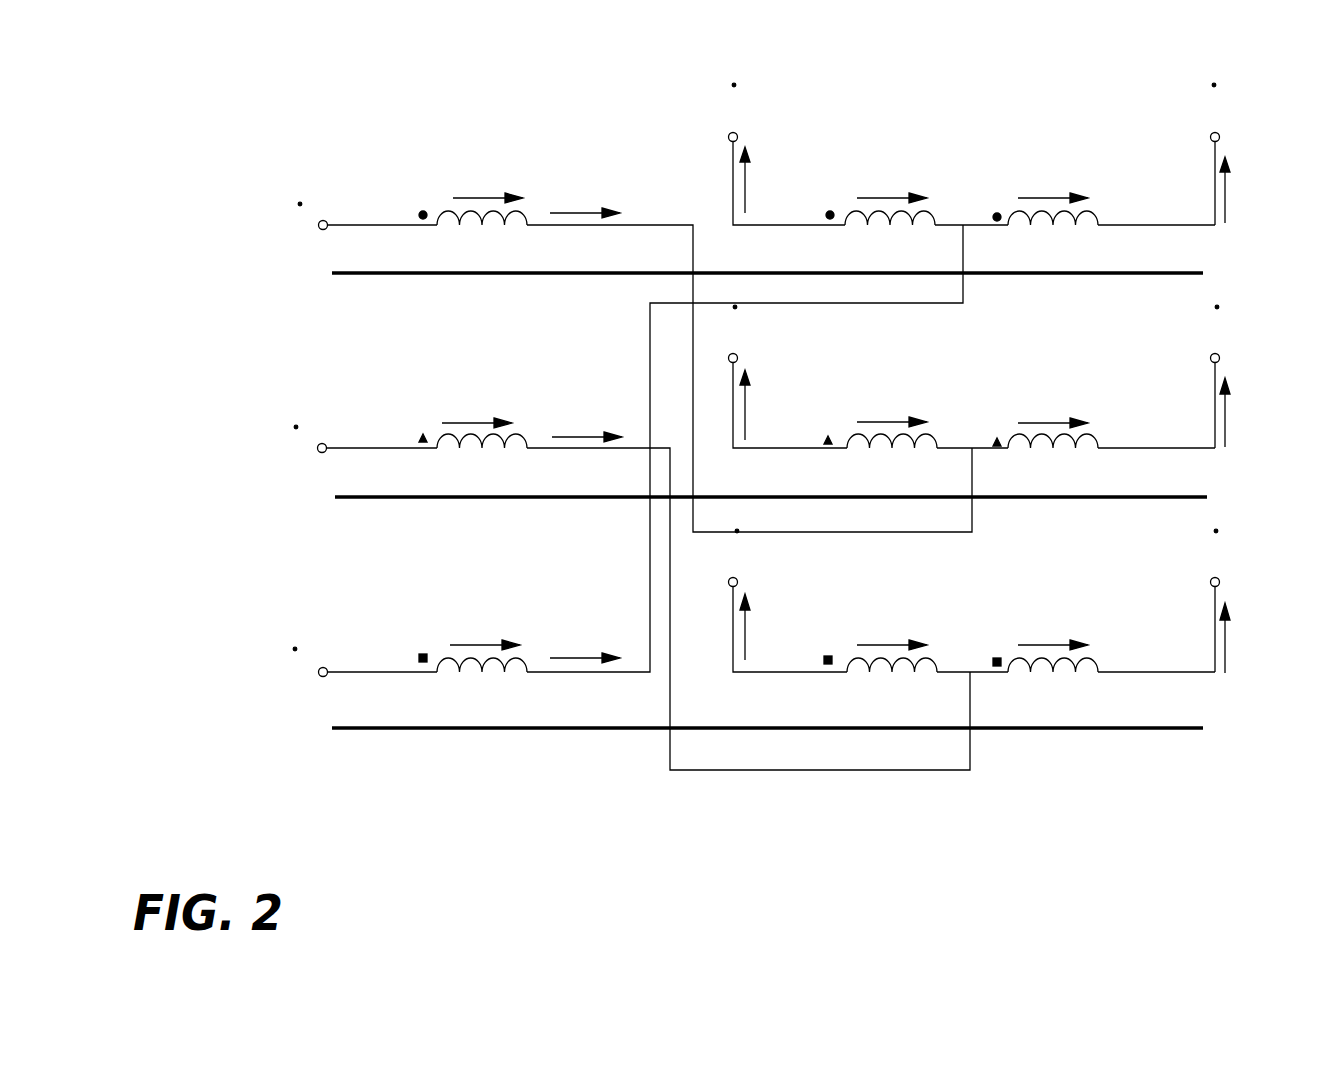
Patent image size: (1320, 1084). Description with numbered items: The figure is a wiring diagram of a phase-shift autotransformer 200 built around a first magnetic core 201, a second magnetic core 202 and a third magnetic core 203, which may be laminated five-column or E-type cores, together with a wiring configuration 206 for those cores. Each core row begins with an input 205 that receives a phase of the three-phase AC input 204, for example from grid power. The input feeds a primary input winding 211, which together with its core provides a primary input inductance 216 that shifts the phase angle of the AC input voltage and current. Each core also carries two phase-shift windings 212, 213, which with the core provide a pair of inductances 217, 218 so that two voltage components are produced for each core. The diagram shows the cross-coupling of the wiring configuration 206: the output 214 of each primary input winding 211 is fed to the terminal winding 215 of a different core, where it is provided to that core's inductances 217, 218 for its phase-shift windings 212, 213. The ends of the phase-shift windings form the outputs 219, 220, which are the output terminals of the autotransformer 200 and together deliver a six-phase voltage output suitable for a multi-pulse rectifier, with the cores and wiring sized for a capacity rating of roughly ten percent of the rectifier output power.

The phase-shift autotransformer 200 is at (290, 111).
The first magnetic core 201 is at (277, 303).
The second magnetic core 202 is at (277, 518).
The third magnetic core 203 is at (270, 723).
The AC input 204 is at (232, 672).
The input 205 is at (327, 670).
The wiring configuration 206 is at (630, 152).
The primary input winding 211 is at (472, 767).
The phase-shift winding 212 is at (1025, 790).
The phase-shift winding 213 is at (872, 790).
The output of primary input winding 214 is at (580, 775).
The terminal winding 215 is at (985, 210).
The primary input inductance 216 is at (527, 658).
The phase-shift winding inductance 217 is at (1100, 660).
The phase-shift winding inductance 218 is at (850, 658).
The output 219 is at (1207, 583).
The output 220 is at (740, 132).